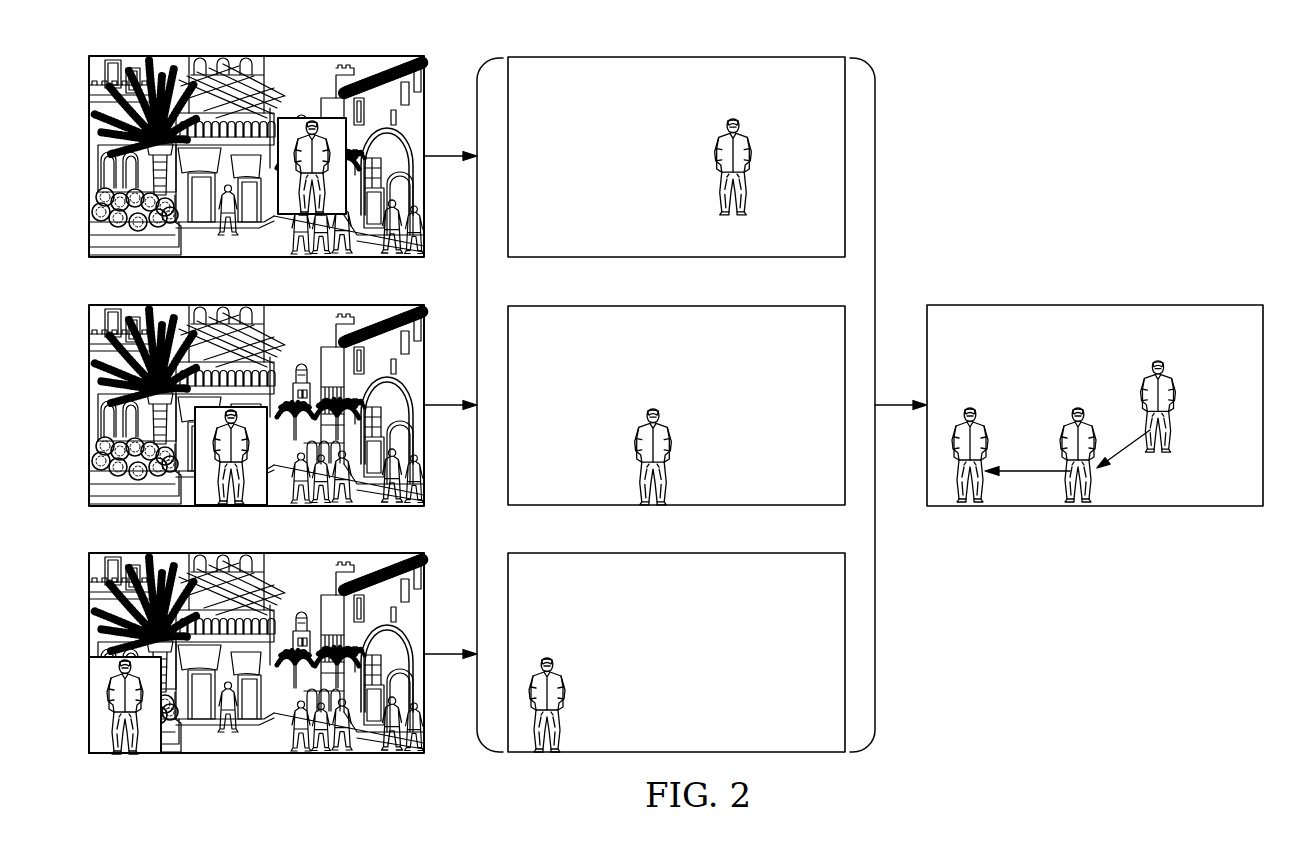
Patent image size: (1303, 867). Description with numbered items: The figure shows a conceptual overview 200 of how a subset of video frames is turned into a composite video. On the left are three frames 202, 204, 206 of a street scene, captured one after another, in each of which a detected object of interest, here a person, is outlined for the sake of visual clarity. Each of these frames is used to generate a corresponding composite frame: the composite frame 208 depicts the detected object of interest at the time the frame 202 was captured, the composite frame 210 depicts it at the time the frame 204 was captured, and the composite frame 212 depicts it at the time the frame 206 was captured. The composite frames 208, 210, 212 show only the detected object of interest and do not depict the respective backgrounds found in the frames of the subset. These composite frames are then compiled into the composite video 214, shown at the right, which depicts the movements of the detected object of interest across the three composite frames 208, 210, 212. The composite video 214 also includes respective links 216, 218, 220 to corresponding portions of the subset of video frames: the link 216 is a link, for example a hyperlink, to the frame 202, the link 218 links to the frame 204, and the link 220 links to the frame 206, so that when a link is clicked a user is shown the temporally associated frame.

The conceptual overview 200 is at (1172, 65).
The frame 202 is at (337, 56).
The frame 204 is at (337, 305).
The frame 206 is at (337, 553).
The composite frame 208 is at (798, 57).
The composite frame 210 is at (798, 306).
The composite frame 212 is at (798, 553).
The composite video 214 is at (1217, 305).
The link 216 is at (1158, 360).
The link 218 is at (1079, 407).
The link 220 is at (970, 407).